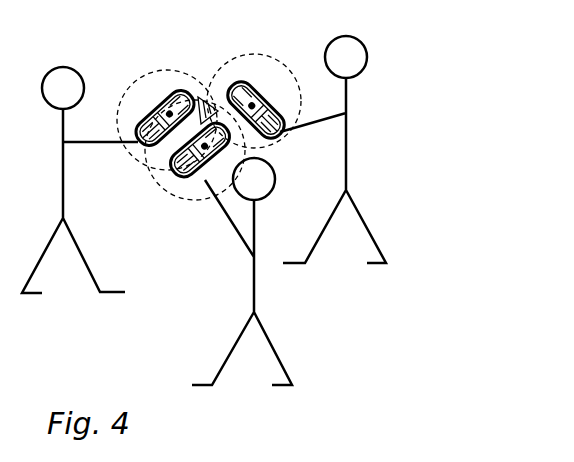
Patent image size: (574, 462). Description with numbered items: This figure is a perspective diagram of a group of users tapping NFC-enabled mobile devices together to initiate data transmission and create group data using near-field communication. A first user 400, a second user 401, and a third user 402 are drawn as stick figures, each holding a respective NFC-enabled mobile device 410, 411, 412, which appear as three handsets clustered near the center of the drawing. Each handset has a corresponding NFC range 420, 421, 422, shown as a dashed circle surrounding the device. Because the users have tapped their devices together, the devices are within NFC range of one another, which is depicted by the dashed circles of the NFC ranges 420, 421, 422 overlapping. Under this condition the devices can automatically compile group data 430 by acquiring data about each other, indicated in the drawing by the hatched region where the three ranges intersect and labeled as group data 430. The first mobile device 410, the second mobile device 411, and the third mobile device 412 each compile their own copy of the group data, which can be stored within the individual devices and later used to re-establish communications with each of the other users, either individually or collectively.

The first user 400 is at (98, 284).
The second user 401 is at (224, 366).
The third user 402 is at (377, 238).
The NFC-enabled mobile device 410 is at (143, 125).
The NFC-enabled mobile device 411 is at (201, 203).
The NFC-enabled mobile device 412 is at (286, 136).
The NFC range 420 is at (135, 166).
The NFC range 421 is at (170, 187).
The NFC range 422 is at (246, 48).
The group data 430 is at (232, 86).